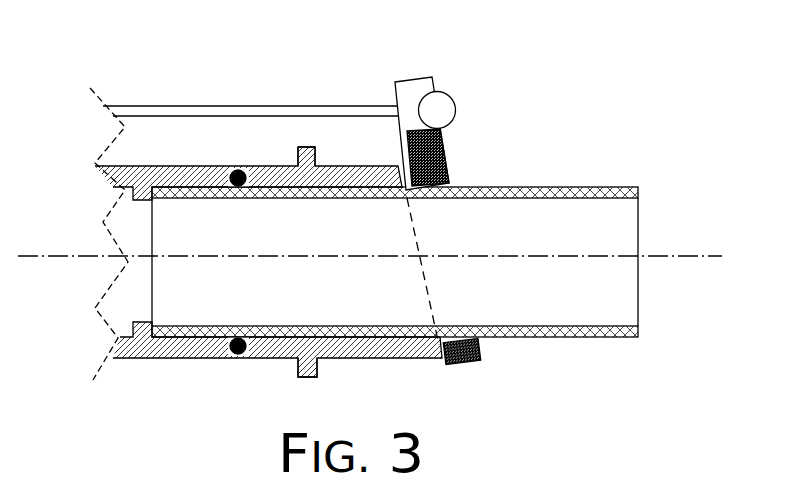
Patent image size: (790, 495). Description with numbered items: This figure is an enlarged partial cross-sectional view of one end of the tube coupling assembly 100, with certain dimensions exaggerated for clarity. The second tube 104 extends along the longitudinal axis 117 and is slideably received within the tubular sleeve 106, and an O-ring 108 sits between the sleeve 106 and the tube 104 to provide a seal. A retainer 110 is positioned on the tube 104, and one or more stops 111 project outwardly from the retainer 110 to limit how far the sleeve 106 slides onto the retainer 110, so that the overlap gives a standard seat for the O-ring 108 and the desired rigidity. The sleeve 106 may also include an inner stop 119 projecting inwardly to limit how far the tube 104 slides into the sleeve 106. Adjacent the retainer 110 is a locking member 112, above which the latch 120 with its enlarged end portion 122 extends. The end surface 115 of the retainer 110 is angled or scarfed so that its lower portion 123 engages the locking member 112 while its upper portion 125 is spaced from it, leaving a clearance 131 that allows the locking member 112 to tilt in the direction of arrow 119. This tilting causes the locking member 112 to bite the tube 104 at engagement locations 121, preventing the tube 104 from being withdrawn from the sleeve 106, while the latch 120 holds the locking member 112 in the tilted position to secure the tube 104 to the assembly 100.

The tube coupling assembly 100 is at (607, 57).
The second tube 104 is at (605, 187).
The tubular sleeve 106 is at (147, 357).
The O-ring 108 is at (232, 356).
The retainer 110 is at (383, 353).
The stop 111 is at (302, 148).
The locking member 112 is at (447, 149).
The end surface 115 is at (424, 271).
The longitudinal axis 117 is at (668, 256).
The inner stop / tilting arrow 119 is at (372, 60).
The latch 120 is at (245, 105).
The engagement locations 121 is at (403, 189).
The enlarged end portion 122 is at (449, 95).
The lower portion 123 is at (426, 331).
The upper portion 125 is at (390, 191).
The clearance 131 is at (397, 152).